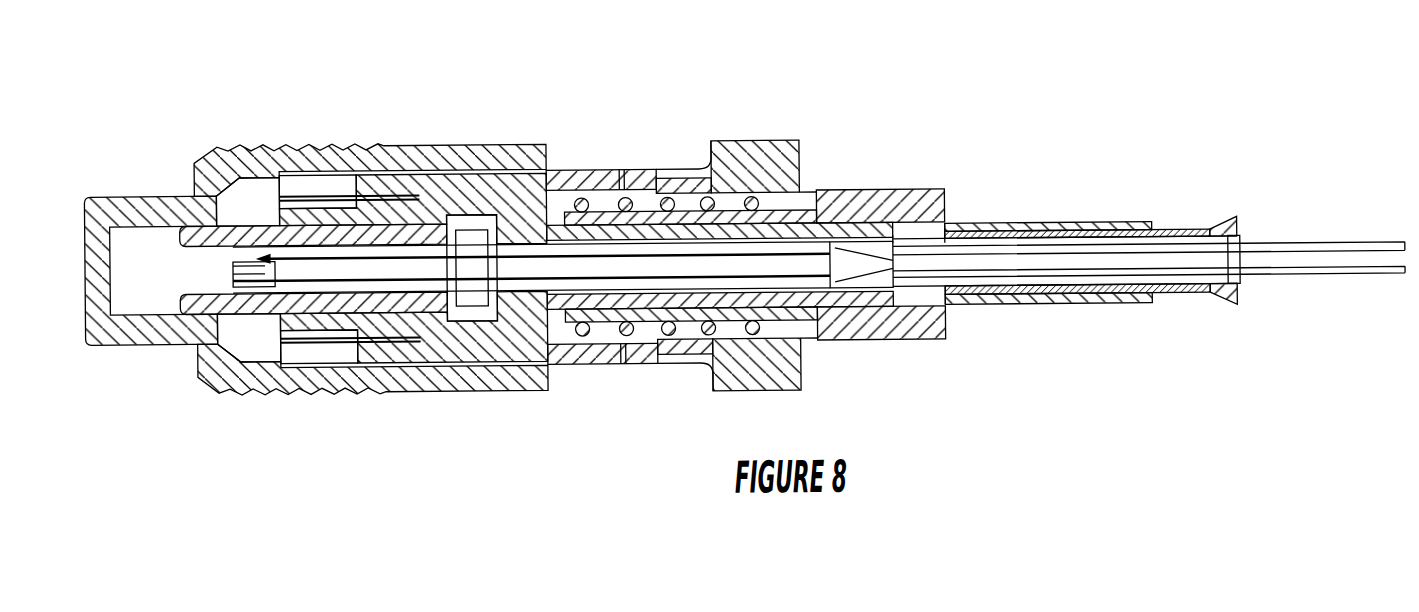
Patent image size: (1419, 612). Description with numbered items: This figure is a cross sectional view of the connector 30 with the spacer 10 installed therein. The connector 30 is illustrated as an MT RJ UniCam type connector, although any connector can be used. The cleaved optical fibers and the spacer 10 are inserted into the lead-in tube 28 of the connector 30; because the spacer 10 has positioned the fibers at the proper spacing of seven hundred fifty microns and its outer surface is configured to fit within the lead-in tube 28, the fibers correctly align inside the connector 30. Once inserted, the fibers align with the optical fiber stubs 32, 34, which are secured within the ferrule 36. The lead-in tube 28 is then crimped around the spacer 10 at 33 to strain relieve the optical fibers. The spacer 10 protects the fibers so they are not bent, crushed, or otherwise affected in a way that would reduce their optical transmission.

The connector 30 is at (571, 118).
The optical fiber stub 34 is at (652, 254).
The optical fiber stub 32 is at (617, 278).
The ferrule 36 is at (252, 282).
The crimp 33 is at (1192, 208).
The spacer 10 is at (1240, 245).
The lead-in tube 28 is at (1237, 309).